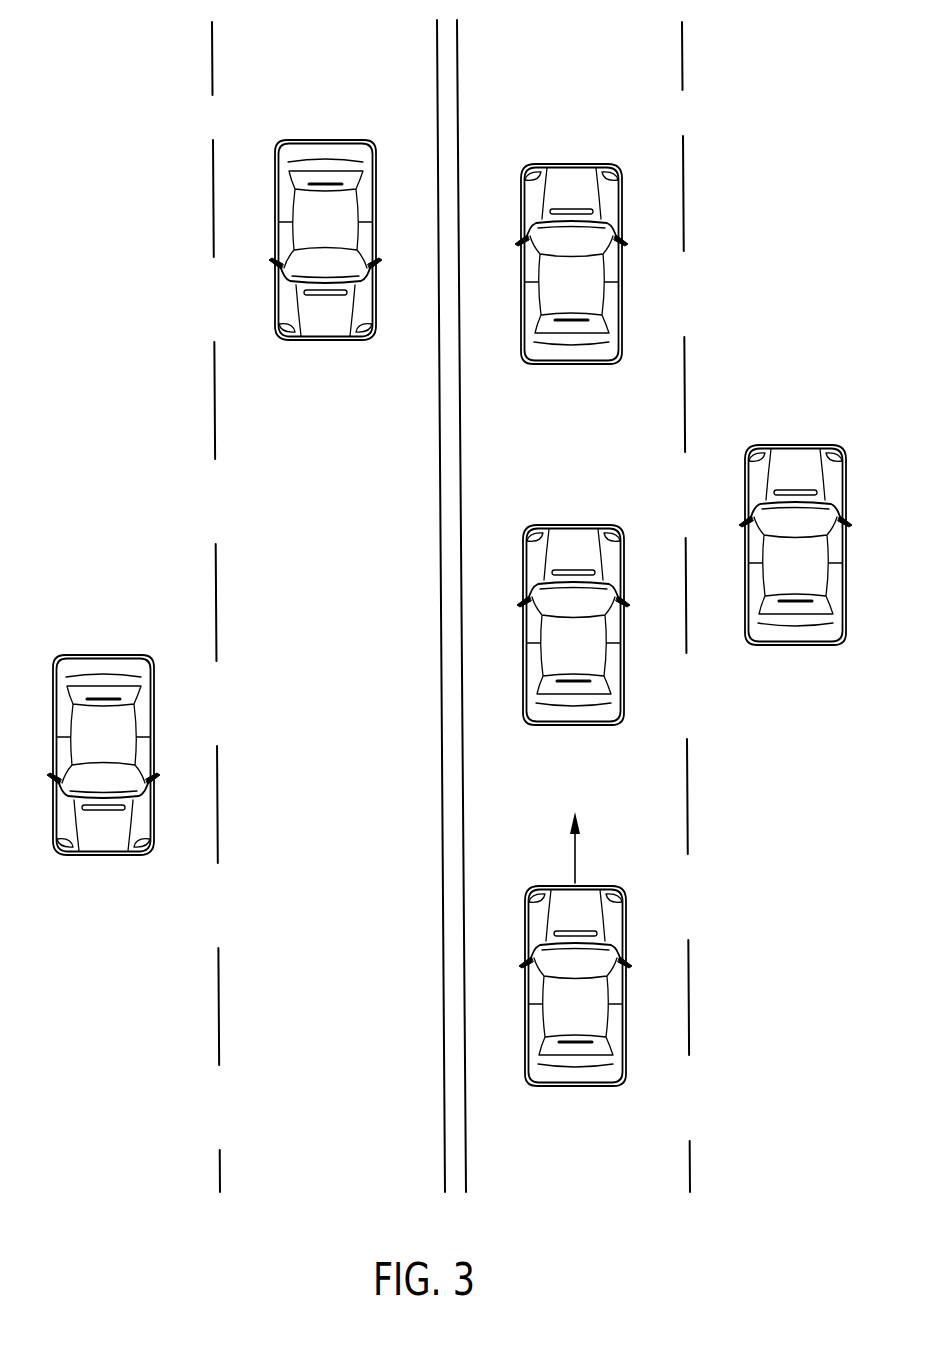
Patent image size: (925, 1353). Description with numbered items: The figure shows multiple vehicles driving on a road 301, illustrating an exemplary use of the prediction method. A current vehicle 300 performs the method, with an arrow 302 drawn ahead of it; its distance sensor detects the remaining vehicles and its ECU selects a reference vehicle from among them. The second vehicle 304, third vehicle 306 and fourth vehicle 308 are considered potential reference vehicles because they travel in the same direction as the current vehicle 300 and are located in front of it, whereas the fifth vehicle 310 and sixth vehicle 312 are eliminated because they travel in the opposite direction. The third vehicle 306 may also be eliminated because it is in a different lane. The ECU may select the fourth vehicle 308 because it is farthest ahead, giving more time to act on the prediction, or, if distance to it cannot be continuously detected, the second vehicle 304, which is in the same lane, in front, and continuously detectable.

The current vehicle 300 is at (616, 886).
The road 301 is at (92, 72).
The direction of travel arrow 302 is at (573, 855).
The second vehicle 304 is at (572, 525).
The third vehicle 306 is at (797, 445).
The fourth vehicle 308 is at (575, 163).
The fifth vehicle 310 is at (103, 652).
The sixth vehicle 312 is at (327, 140).